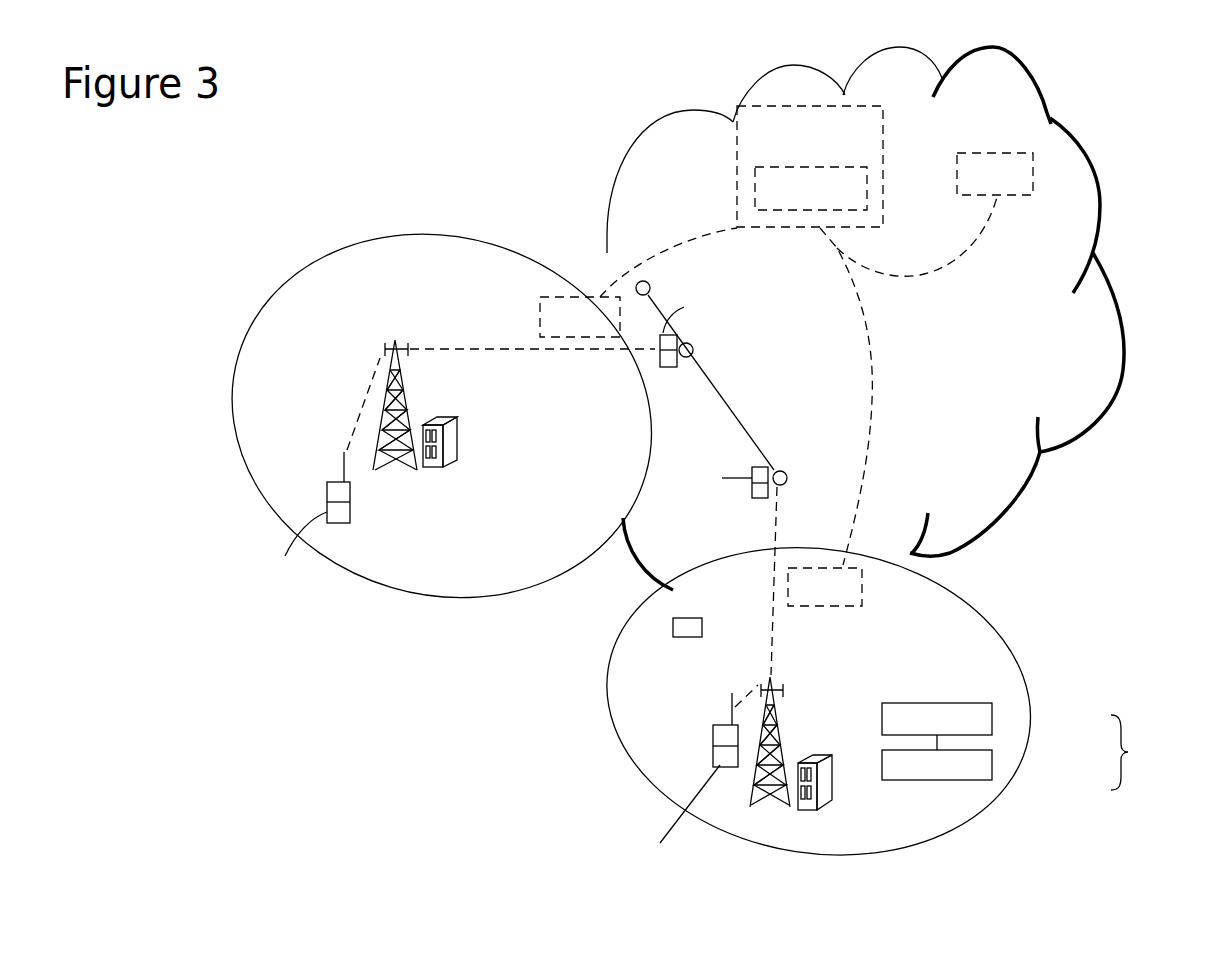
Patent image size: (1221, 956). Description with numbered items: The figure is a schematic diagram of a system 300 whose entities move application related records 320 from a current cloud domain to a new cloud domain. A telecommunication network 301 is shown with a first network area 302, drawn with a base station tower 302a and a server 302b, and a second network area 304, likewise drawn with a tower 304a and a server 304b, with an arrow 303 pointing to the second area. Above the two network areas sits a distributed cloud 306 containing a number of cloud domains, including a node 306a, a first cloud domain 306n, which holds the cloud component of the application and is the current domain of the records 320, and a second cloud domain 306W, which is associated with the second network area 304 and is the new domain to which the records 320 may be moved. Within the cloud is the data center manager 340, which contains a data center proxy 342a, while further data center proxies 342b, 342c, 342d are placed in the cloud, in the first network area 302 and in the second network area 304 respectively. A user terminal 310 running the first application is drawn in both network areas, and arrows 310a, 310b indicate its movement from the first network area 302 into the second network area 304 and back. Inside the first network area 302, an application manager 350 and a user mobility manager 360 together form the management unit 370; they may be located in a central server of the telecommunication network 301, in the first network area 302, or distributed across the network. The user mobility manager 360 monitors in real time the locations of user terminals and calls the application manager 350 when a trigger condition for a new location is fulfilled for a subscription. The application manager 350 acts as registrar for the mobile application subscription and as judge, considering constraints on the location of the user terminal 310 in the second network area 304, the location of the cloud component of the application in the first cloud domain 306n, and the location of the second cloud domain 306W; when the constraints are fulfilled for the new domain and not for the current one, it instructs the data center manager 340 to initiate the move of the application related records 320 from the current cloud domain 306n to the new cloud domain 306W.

The system 300 is at (613, 10).
The telecommunication network 301 is at (1055, 642).
The first network area 302 is at (1022, 704).
The base station tower of network #1 302a is at (752, 798).
The server of network #1 302b is at (827, 790).
The second network area 303 is at (250, 266).
The second network area 304 is at (397, 233).
The base station tower of network #2 304a is at (388, 412).
The server of network #2 304b is at (441, 416).
The network cloud 306 is at (997, 45).
The network node 306a is at (649, 283).
The second cloud domain 306W is at (693, 347).
The first cloud domain 306n is at (787, 473).
The user terminal 310 is at (333, 490).
The user device movement to network #1 310a is at (352, 545).
The user device movement to network #2 310b is at (262, 506).
The application related records 320 is at (667, 367).
The DCM 340 is at (757, 107).
The data center proxy (DCP) in DCM 342a is at (757, 185).
The data center proxy (DCP) in cloud 342b is at (1033, 168).
The data center proxy (DCP) in network #1 342c is at (862, 597).
The data center proxy (DCP) in network #2 342d is at (557, 297).
The application manager 350 is at (992, 767).
The user mobility manager 360 is at (992, 720).
The management unit 370 is at (1138, 752).